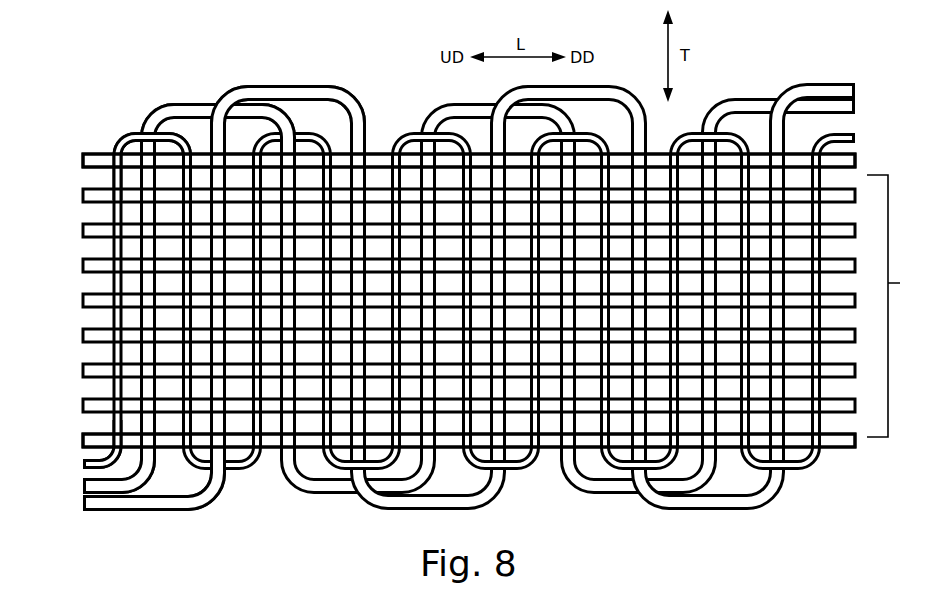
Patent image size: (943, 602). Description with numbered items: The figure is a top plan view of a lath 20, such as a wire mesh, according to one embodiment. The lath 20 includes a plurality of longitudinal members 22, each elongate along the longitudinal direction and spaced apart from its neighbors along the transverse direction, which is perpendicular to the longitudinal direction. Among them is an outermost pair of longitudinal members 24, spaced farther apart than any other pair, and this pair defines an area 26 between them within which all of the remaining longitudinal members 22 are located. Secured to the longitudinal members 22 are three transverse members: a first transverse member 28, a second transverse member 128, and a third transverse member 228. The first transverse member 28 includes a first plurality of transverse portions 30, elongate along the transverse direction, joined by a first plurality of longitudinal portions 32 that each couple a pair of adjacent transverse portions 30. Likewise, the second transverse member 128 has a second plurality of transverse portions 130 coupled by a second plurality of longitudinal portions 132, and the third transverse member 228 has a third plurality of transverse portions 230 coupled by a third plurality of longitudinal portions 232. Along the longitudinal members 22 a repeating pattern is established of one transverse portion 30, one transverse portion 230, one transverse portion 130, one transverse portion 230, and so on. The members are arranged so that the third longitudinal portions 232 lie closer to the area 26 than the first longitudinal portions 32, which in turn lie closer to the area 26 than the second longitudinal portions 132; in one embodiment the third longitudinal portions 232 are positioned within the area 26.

The lath 20 is at (458, 287).
The longitudinal members 22 is at (82, 440).
The outermost pair of longitudinal members 24 is at (853, 446).
The area 26 is at (897, 306).
The first transverse member 28 is at (83, 487).
The first plurality of transverse portions 30 is at (148, 349).
The first plurality of longitudinal portions 32 is at (187, 108).
The second transverse member 128 is at (83, 507).
The second plurality of transverse portions 130 is at (217, 281).
The second plurality of longitudinal portions 132 is at (263, 88).
The third transverse member 228 is at (83, 465).
The third plurality of transverse portions 230 is at (113, 205).
The third plurality of longitudinal portions 232 is at (142, 138).